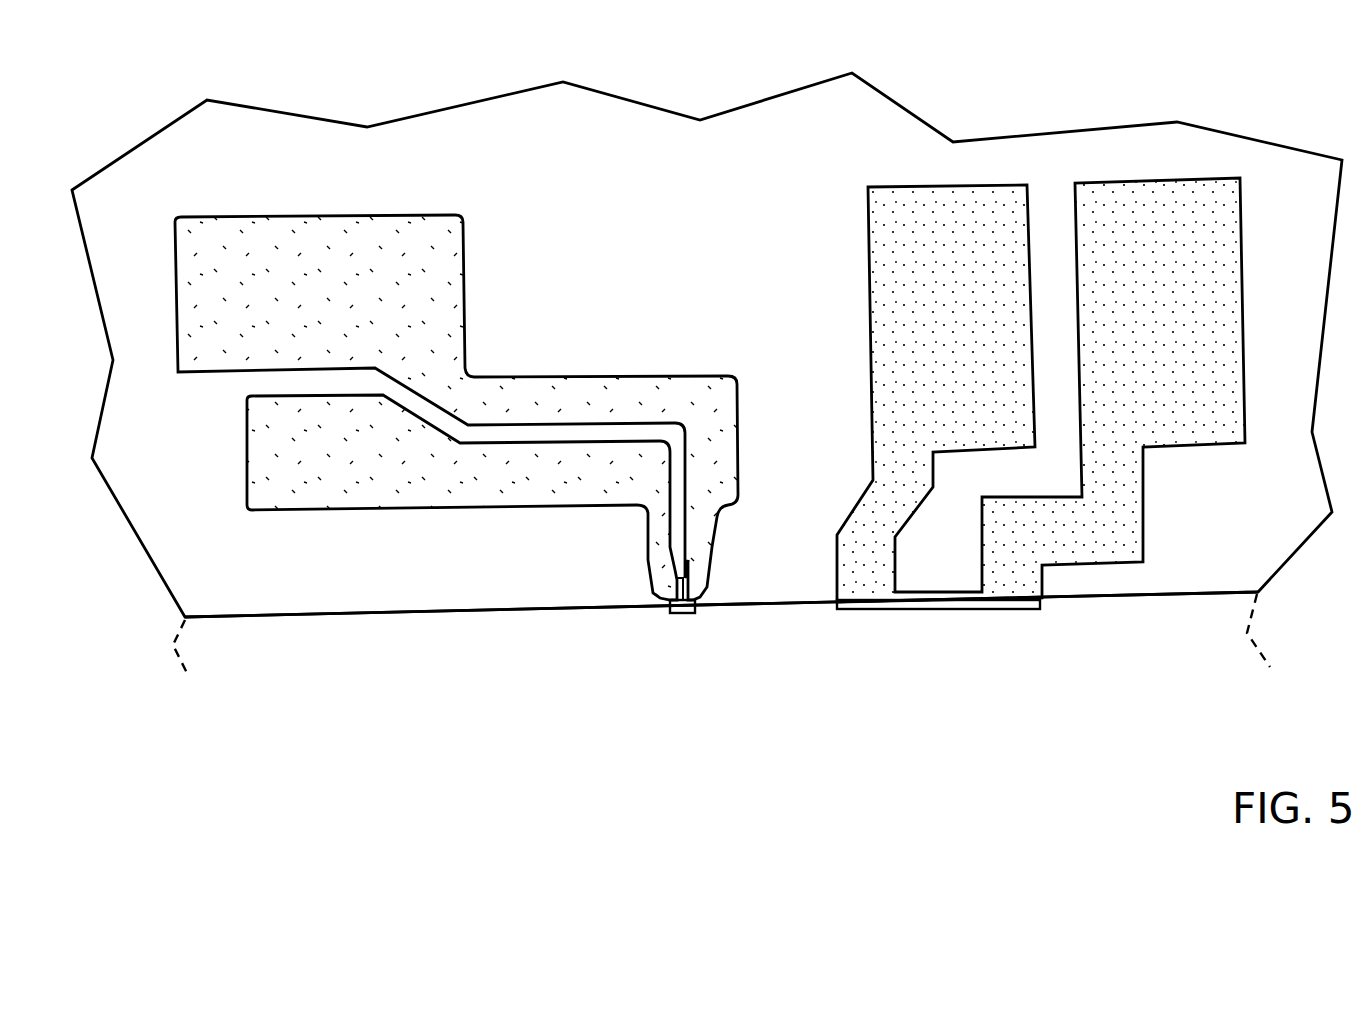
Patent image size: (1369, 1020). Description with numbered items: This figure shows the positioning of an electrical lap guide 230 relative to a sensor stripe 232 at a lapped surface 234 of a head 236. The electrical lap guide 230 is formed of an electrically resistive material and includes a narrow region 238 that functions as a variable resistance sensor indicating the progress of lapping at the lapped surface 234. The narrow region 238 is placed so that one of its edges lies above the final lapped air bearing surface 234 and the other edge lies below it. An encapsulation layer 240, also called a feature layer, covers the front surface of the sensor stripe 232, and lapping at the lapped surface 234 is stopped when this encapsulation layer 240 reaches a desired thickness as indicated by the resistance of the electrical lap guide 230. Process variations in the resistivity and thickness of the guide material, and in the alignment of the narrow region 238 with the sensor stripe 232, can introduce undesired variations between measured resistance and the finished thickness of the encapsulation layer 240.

The electrical lap guide 230 is at (955, 330).
The sensor stripe 232 is at (678, 591).
The lapped surface 234 is at (508, 613).
The head 236 is at (688, 216).
The narrow region 238 is at (950, 609).
The encapsulation layer 240 is at (681, 613).